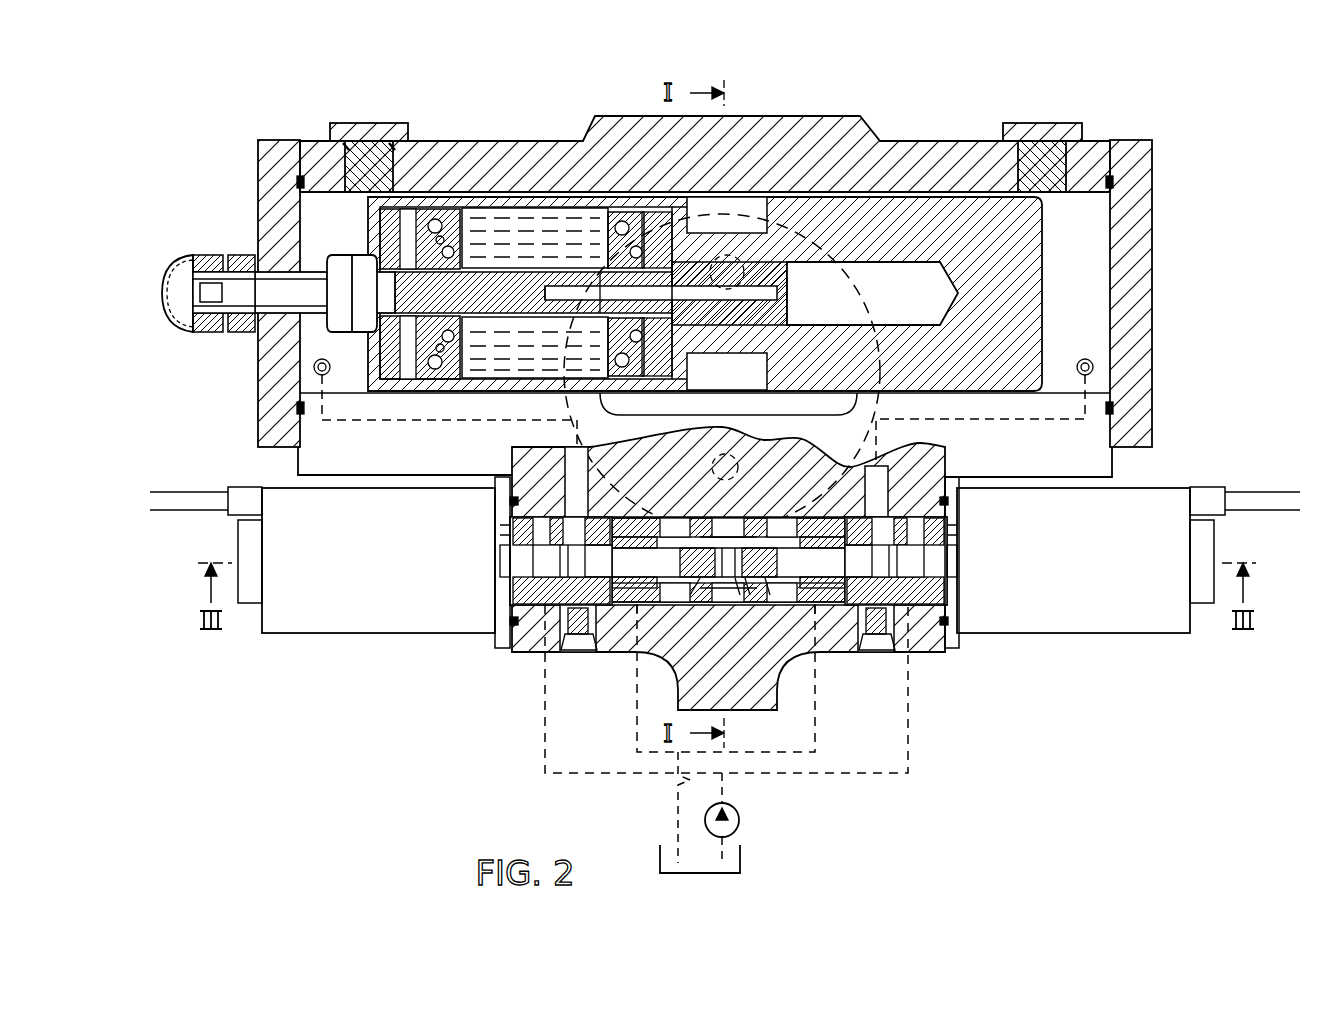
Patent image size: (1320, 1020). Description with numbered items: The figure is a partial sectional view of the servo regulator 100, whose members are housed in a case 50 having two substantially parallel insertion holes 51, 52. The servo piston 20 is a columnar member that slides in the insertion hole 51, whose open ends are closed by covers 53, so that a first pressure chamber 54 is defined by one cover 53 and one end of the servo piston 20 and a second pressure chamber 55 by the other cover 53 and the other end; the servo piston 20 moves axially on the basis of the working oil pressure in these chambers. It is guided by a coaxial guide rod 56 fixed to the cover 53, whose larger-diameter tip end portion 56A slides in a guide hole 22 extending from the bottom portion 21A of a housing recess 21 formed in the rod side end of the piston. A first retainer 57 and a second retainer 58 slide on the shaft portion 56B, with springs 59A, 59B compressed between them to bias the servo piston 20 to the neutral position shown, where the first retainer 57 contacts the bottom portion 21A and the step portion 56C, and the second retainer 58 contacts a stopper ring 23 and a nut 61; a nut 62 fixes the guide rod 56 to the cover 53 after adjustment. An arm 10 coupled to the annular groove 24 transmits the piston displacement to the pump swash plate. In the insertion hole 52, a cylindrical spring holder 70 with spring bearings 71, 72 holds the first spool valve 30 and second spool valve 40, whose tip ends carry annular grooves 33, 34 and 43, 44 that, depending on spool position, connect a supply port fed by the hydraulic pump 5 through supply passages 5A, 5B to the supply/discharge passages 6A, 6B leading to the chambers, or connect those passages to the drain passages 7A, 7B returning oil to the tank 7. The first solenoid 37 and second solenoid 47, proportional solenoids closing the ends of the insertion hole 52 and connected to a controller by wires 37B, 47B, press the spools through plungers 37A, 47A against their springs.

The servo regulator 100 is at (1172, 125).
The arm 10 is at (870, 178).
The servo piston 20 is at (1062, 238).
The housing recess 21 is at (550, 250).
The bottom portion 21A is at (655, 232).
The guide hole 22 is at (920, 262).
The stopper ring 23 is at (411, 205).
The annular groove 24 is at (760, 197).
The first spool valve 30 is at (946, 626).
The annular groove 33 is at (910, 612).
The annular groove 34 is at (868, 612).
The first solenoid 37 is at (1172, 495).
The plunger 37A is at (947, 565).
The wire 37B is at (1254, 482).
The second spool valve 40 is at (512, 640).
The annular groove 43 is at (540, 612).
The annular groove 44 is at (582, 640).
The second solenoid 47 is at (277, 495).
The plunger 47A is at (512, 565).
The wire 47B is at (172, 482).
The case 50 is at (537, 157).
The insertion hole 51 is at (688, 205).
The insertion hole 52 is at (738, 595).
The cover 53 is at (262, 162).
The first pressure chamber 54 is at (1095, 298).
The second pressure chamber 55 is at (320, 206).
The guide rod 56 is at (280, 322).
The tip end portion 56A is at (792, 258).
The shaft portion 56B is at (300, 280).
The step portion 56C is at (598, 268).
The first retainer 57 is at (620, 240).
The second retainer 58 is at (447, 240).
The spring 59A is at (470, 226).
The spring 59B is at (520, 240).
The nut 61 is at (370, 197).
The nut 62 is at (190, 257).
The spring holder 70 is at (772, 600).
The spring bearing 71 is at (752, 598).
The spring bearing 72 is at (700, 578).
The hydraulic pump 5 is at (740, 820).
The supply passage 5A is at (908, 752).
The supply passage 5B is at (545, 753).
The supply/discharge passage 6A is at (1112, 408).
The supply/discharge passage 6B is at (300, 412).
The tank 7 is at (740, 855).
The drain passage 7A is at (817, 740).
The drain passage 7B is at (641, 614).